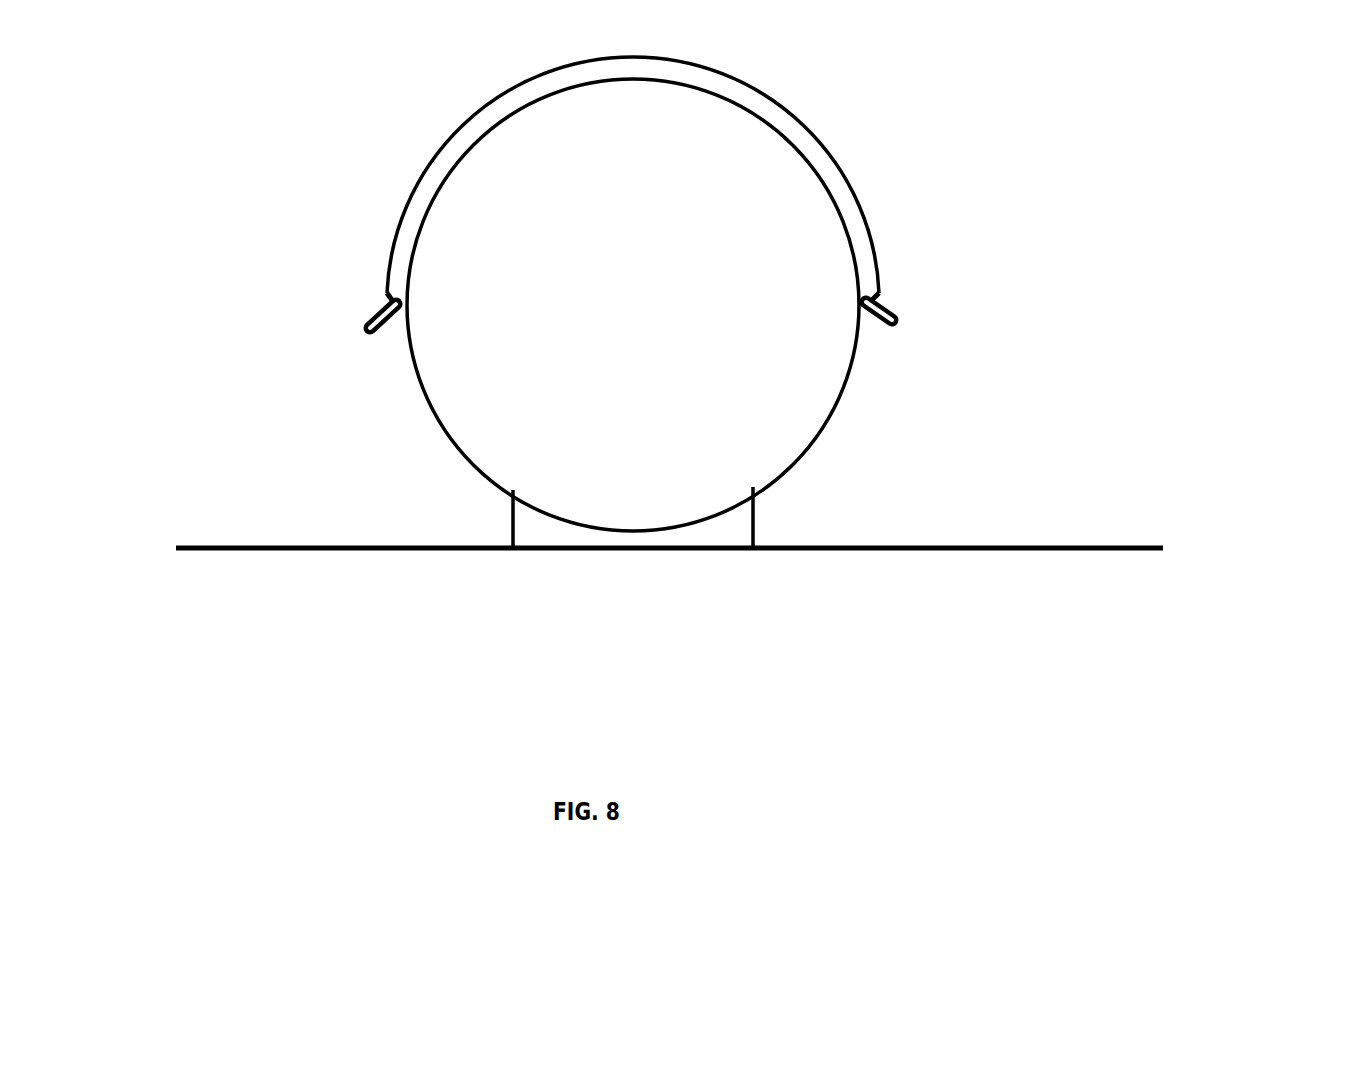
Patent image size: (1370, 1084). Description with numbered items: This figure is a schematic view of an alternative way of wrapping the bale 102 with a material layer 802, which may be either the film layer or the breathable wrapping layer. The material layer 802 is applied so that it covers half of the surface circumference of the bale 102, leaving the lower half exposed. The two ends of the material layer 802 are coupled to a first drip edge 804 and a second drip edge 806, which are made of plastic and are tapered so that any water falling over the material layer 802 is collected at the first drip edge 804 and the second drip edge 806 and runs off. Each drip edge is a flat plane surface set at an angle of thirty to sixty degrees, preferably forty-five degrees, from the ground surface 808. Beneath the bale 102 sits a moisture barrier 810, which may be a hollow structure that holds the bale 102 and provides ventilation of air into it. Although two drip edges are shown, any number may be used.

The bale 102 is at (449, 440).
The material layer 802 is at (432, 160).
The first drip edge 804 is at (356, 337).
The second drip edge 806 is at (898, 334).
The ground surface 808 is at (1114, 552).
The moisture barrier 810 is at (762, 508).